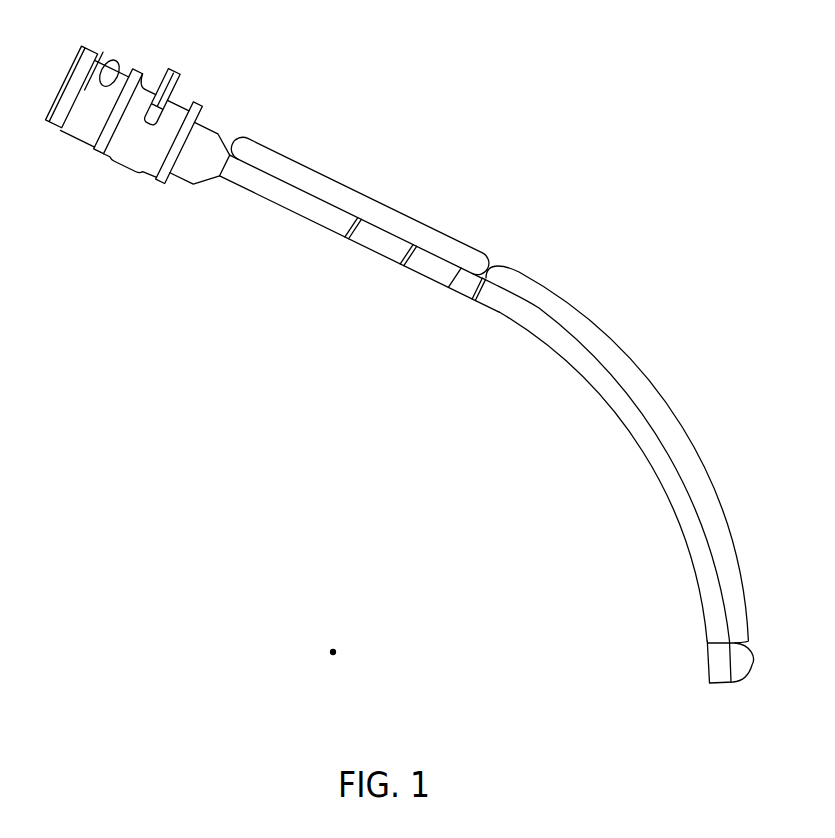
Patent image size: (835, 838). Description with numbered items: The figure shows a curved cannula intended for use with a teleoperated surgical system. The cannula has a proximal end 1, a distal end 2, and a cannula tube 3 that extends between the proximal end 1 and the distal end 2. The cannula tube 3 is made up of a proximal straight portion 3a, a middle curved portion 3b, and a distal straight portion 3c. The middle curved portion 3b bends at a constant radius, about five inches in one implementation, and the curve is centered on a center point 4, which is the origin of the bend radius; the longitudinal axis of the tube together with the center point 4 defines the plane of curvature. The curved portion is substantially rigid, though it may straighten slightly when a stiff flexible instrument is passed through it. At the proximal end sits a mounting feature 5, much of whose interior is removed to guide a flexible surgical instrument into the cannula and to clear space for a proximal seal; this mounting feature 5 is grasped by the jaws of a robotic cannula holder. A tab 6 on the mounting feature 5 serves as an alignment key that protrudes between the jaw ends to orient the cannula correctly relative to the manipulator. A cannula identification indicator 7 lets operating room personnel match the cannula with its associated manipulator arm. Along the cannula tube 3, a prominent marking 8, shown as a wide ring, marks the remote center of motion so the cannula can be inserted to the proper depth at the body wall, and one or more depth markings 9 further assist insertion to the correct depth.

The proximal end 1 is at (48, 84).
The distal end 2 is at (725, 703).
The cannula tube 3 is at (332, 233).
The proximal straight portion 3a is at (377, 206).
The middle curved portion 3b is at (678, 421).
The distal straight portion 3c is at (752, 662).
The center point 4 is at (333, 656).
The mounting feature 5 is at (84, 143).
The tab 6 is at (172, 67).
The cannula identification indicator 7 is at (113, 62).
The prominent marking 8 is at (453, 292).
The depth markings 9 is at (407, 266).